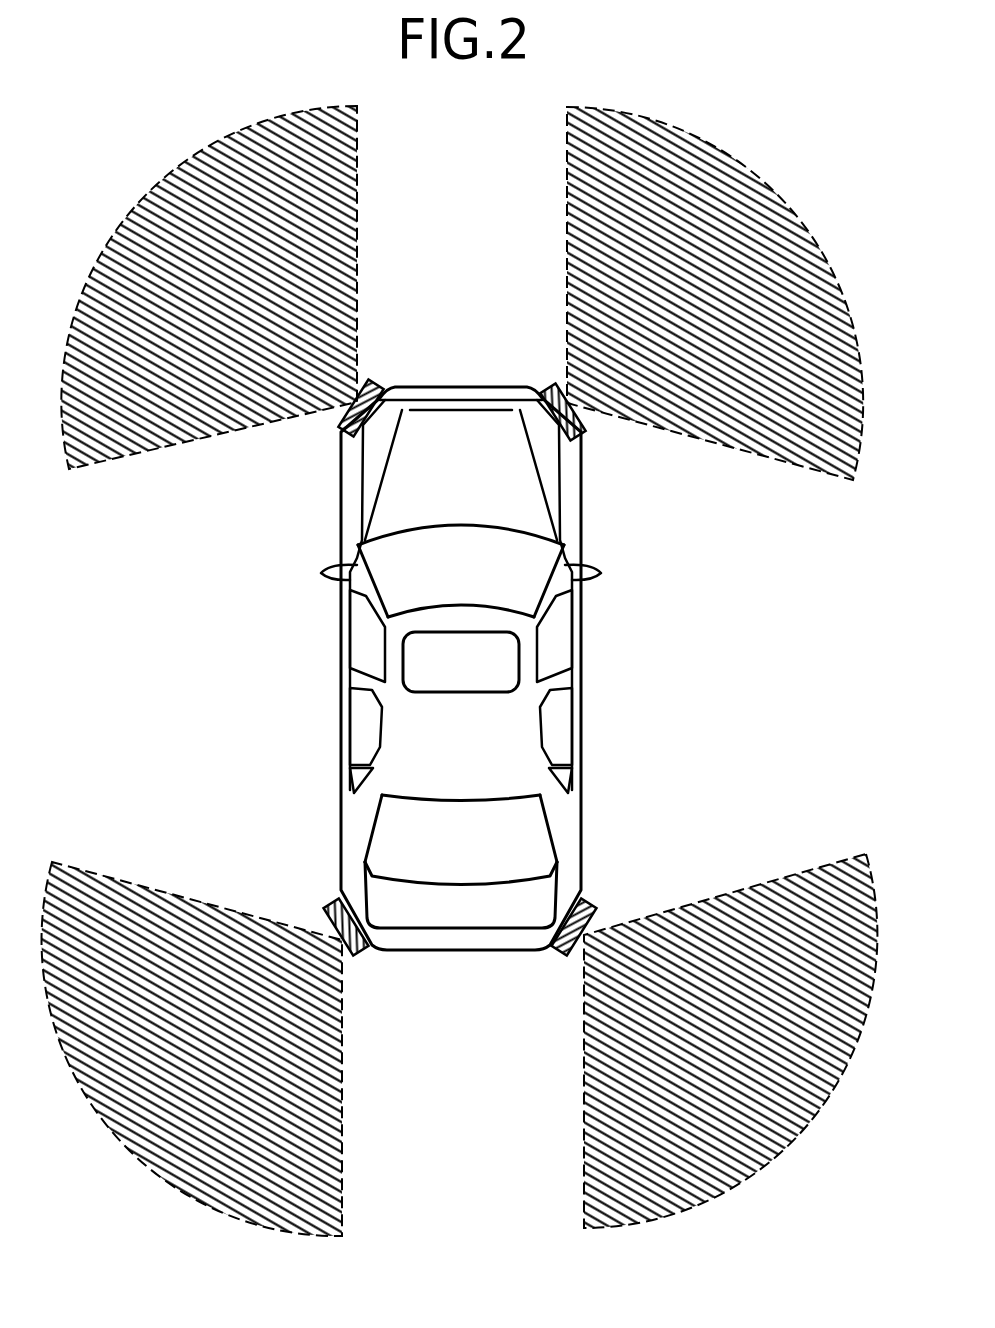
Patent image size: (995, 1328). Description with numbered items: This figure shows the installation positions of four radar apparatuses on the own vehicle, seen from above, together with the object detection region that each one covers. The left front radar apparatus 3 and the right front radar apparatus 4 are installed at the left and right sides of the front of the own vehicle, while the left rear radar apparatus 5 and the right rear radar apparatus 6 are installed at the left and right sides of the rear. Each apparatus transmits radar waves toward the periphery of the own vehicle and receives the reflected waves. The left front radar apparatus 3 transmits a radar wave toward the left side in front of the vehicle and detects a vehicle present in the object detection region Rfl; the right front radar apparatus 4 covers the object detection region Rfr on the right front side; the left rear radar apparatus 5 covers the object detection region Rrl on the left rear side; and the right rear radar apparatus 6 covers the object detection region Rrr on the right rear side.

The object detection region Rfl is at (358, 152).
The object detection region Rfr is at (742, 162).
The object detection region Rrl is at (166, 892).
The object detection region Rrr is at (738, 886).
The left front radar apparatus 3 is at (378, 379).
The right front radar apparatus 4 is at (553, 385).
The left rear radar apparatus 5 is at (365, 955).
The right rear radar apparatus 6 is at (557, 955).